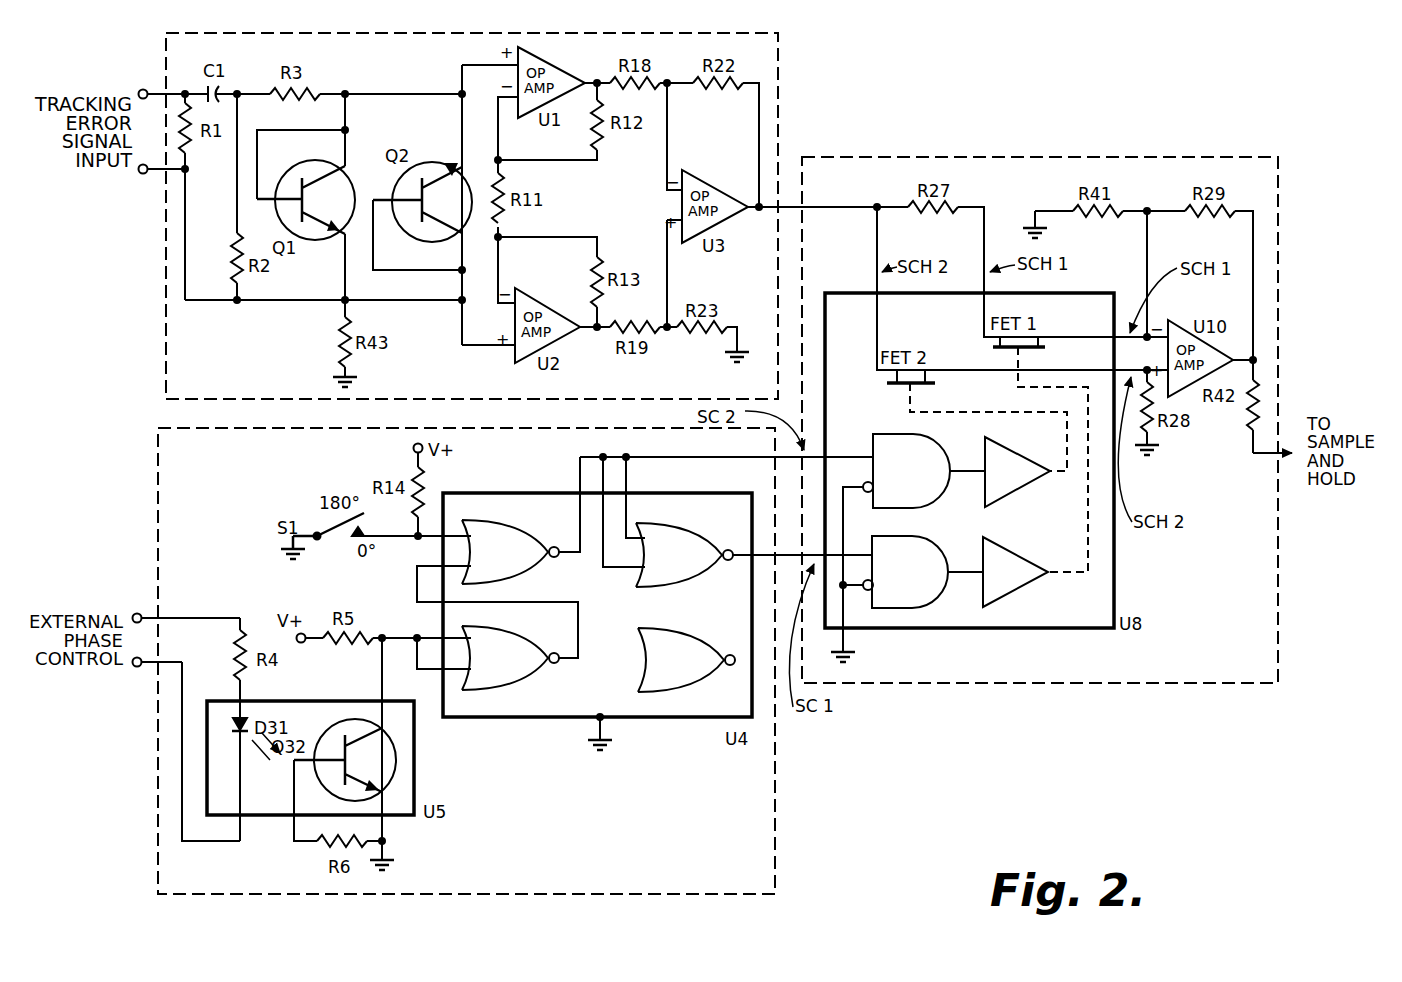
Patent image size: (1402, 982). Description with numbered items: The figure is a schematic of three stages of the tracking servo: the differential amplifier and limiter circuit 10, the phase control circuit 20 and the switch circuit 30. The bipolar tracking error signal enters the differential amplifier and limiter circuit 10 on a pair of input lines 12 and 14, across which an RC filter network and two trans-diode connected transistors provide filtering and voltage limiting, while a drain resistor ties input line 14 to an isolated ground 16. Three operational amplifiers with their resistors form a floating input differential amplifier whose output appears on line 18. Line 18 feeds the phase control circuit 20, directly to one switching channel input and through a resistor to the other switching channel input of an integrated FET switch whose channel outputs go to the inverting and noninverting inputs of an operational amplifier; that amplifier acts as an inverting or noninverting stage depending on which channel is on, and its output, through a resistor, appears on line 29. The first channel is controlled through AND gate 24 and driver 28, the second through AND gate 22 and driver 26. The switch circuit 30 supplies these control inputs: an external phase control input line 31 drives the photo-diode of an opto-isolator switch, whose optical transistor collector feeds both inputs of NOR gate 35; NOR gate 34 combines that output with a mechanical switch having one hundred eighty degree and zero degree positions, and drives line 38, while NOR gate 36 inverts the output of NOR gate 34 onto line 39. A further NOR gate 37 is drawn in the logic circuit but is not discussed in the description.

The differential amplifier and limiter circuit 10 is at (784, 84).
The input line 12 is at (160, 90).
The input line 14 is at (157, 172).
The isolated ground 16 is at (334, 377).
The line 18 is at (790, 207).
The phase control circuit 20 is at (1002, 157).
The AND gate 22 is at (890, 483).
The AND gate 24 is at (890, 584).
The driver 26 is at (993, 484).
The driver 28 is at (991, 585).
The line 29 is at (1267, 458).
The switch circuit 30 is at (777, 763).
The external phase control input line 31 is at (153, 610).
The NOR gate 34 is at (482, 564).
The NOR gate 35 is at (482, 670).
The NOR gate 36 is at (657, 567).
The NOR gate 37 is at (658, 672).
The line 38 is at (742, 460).
The line 39 is at (740, 562).